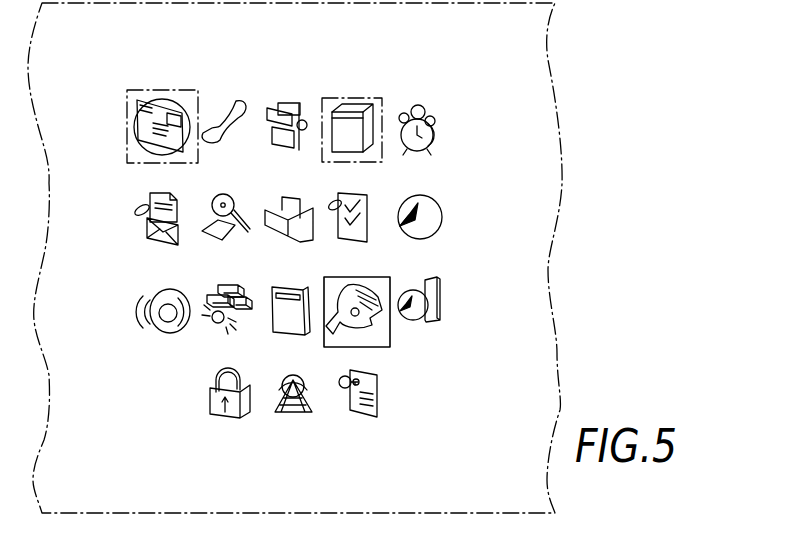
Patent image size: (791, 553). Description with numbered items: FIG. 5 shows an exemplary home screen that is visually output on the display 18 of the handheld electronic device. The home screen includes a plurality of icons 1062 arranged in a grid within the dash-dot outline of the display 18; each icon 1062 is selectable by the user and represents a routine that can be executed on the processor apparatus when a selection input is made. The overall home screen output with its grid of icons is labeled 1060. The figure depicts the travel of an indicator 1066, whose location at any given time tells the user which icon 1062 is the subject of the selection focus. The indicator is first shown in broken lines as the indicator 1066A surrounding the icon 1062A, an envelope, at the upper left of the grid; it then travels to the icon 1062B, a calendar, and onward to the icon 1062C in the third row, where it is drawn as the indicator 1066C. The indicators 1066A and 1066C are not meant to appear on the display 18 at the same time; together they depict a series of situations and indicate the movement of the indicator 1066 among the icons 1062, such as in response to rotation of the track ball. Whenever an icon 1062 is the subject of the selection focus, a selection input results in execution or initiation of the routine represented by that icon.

The display 18 is at (536, 47).
The icon display 1060 is at (432, 88).
The icons 1062 is at (279, 208).
The icon 1062A is at (180, 110).
The icon 1062B is at (353, 110).
The icon 1062C is at (352, 327).
The indicator 1066 is at (360, 161).
The indicator 1066A is at (137, 164).
The indicator 1066C is at (324, 342).